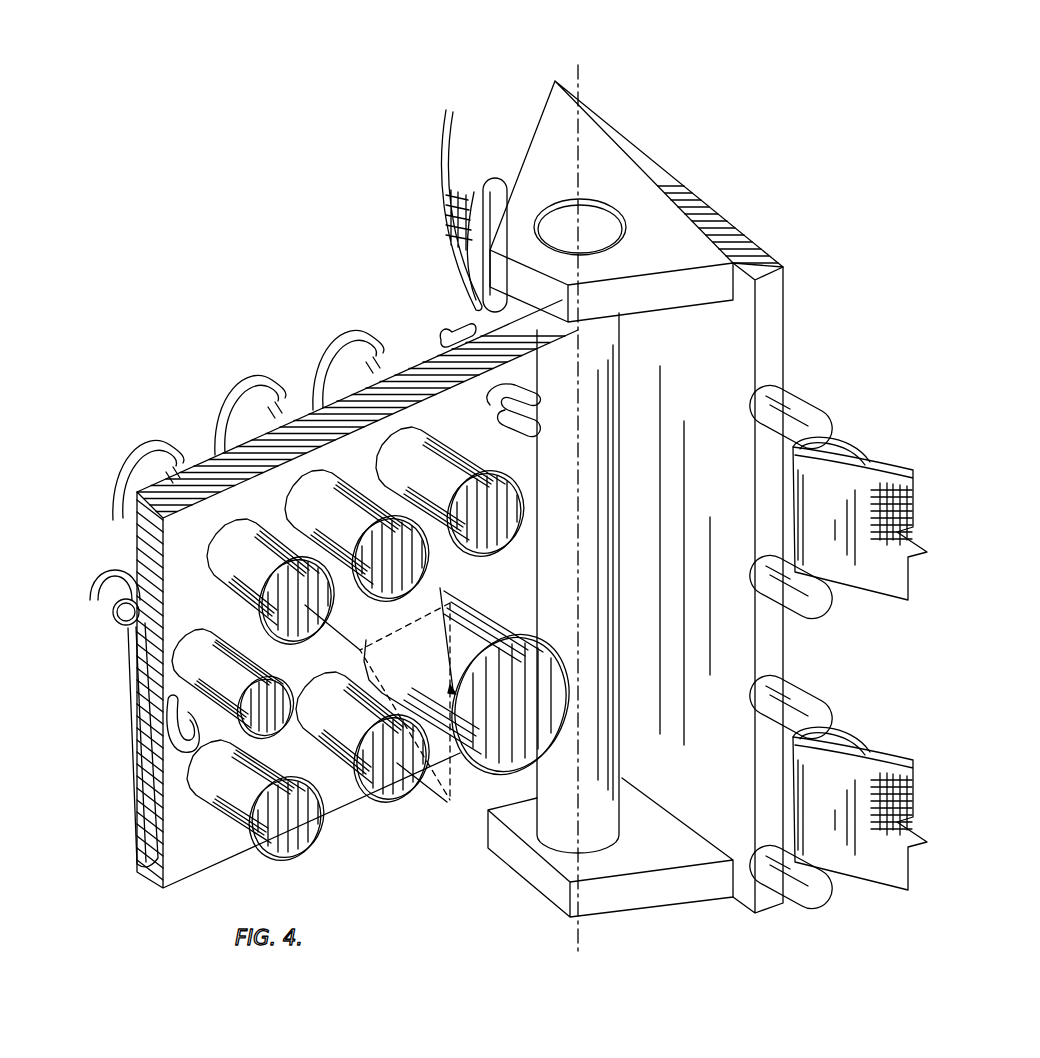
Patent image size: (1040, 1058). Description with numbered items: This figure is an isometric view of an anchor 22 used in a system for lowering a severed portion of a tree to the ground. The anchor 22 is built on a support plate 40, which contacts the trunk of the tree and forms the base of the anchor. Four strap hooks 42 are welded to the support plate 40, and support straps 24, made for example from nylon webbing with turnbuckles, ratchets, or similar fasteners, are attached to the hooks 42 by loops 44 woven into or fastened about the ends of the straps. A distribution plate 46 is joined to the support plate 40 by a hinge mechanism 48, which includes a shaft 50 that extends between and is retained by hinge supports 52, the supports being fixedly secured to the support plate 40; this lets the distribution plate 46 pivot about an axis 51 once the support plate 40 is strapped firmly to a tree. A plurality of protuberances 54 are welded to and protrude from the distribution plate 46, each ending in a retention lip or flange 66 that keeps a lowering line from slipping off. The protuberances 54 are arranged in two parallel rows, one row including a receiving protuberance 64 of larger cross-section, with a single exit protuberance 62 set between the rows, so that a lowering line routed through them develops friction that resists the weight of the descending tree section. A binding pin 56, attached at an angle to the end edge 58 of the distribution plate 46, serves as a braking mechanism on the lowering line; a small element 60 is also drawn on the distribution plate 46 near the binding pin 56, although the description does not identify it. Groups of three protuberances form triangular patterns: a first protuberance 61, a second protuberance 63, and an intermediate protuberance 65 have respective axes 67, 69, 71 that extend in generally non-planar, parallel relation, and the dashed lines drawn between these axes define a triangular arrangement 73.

The anchor 22 is at (293, 288).
The support straps 24 is at (449, 120).
The support plate 40 is at (790, 320).
The strap hooks 42 is at (497, 178).
The loops 44 is at (474, 192).
The distribution plate 46 is at (445, 350).
The hinge mechanism 48 is at (635, 509).
The shaft 50 is at (606, 493).
The axis 51 is at (580, 120).
The hinge supports 52 is at (668, 242).
The protuberances 54 is at (377, 637).
The binding pin 56 is at (98, 636).
The end edge 58 is at (140, 873).
The hook 60 is at (153, 692).
The first protuberance 61 is at (320, 512).
The exit protuberance 62 is at (225, 645).
The second protuberance 63 is at (355, 745).
The receiving protuberance 64 is at (478, 595).
The intermediate protuberance 65 is at (232, 545).
The retention lip or flange 66 is at (480, 552).
The axis 67 is at (440, 588).
The axis 69 is at (447, 802).
The axis 71 is at (360, 650).
The triangular arrangement 73 is at (478, 693).